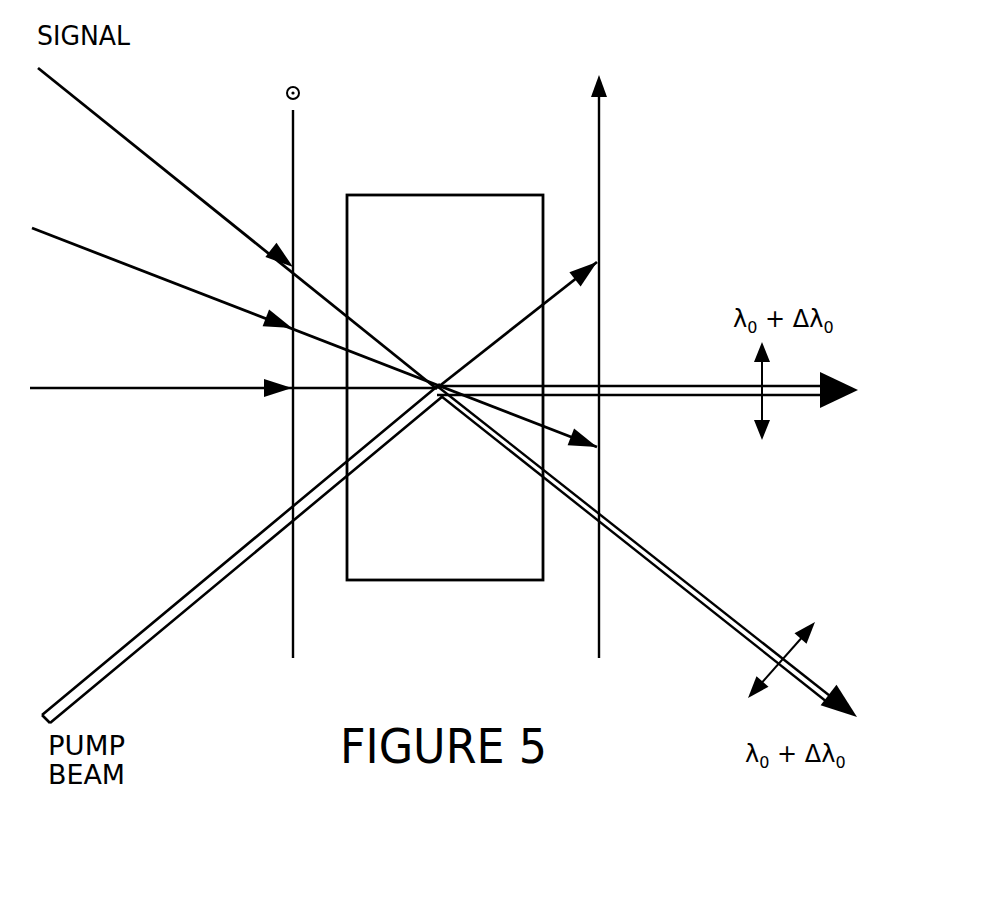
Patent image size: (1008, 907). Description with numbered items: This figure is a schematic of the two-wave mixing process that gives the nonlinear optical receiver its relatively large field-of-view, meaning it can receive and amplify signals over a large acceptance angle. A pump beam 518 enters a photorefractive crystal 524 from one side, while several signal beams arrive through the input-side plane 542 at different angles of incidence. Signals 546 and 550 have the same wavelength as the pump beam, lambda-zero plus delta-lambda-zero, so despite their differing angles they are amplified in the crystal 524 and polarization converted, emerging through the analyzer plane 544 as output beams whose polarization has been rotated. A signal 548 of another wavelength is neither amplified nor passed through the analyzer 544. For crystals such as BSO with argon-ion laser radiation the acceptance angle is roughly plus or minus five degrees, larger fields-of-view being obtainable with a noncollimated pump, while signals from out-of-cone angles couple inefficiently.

The pump beam 518 is at (122, 645).
The photorefractive crystal 524 is at (462, 195).
The input polarizer plane 542 is at (294, 155).
The output polarizer plane 544 is at (600, 205).
The signal 546 is at (62, 95).
The signal 548 is at (57, 238).
The signal 550 is at (68, 390).